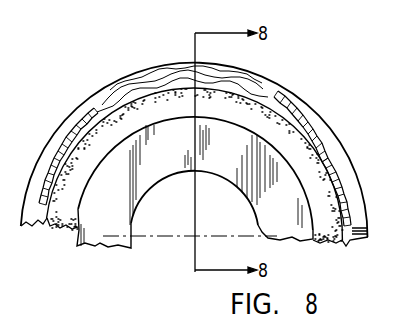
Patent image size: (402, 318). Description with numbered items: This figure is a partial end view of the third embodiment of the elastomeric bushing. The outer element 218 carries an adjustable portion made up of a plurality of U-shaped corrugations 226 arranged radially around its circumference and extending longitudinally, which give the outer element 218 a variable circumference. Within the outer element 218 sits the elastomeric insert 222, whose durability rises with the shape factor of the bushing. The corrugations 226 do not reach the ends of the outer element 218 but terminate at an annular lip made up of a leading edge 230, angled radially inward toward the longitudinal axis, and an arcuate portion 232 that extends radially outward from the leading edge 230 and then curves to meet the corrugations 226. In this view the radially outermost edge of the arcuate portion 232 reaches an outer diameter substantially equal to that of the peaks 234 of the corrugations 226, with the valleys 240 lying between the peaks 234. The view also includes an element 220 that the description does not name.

The outer element 218 is at (57, 130).
The ring body 220 is at (100, 243).
The elastomeric insert 222 is at (67, 207).
The corrugations 226 is at (322, 110).
The leading edge 230 is at (272, 92).
The arcuate portion 232 is at (91, 99).
The peaks 234 is at (128, 83).
The valleys 240 is at (250, 73).